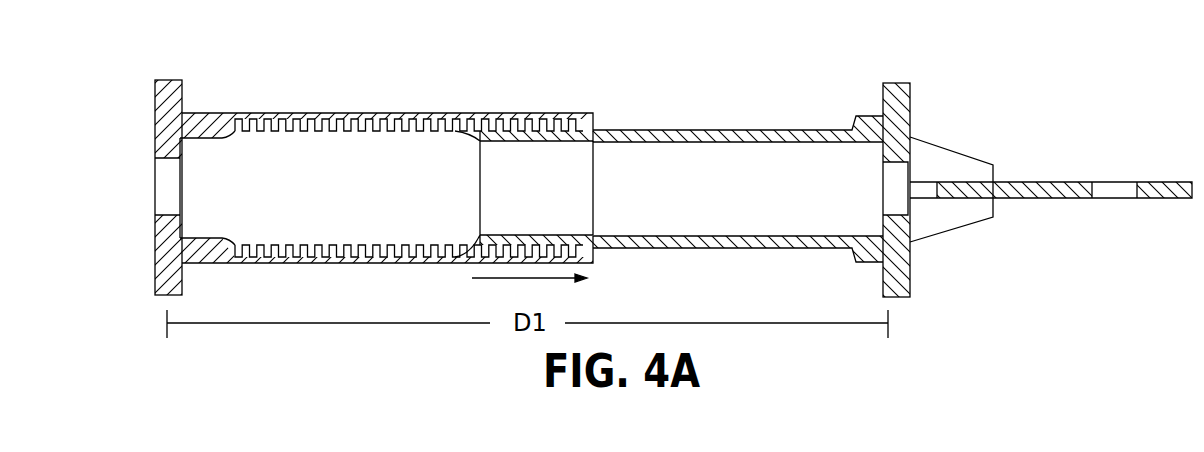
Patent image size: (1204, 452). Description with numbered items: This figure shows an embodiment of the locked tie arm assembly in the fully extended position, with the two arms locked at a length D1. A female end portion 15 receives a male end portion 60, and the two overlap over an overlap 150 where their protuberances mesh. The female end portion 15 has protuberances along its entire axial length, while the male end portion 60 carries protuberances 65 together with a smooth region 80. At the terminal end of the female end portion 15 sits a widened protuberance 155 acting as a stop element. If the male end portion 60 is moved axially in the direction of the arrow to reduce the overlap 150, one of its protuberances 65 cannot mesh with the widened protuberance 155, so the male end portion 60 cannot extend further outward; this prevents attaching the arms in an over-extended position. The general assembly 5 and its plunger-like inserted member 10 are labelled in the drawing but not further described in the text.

The syringe assembly 5 is at (374, 160).
The plunger 10 is at (823, 162).
The female end portion 15 is at (385, 113).
The male end portion 60 is at (693, 129).
The protuberances 65 is at (437, 118).
The smooth region 80 is at (808, 92).
The overlap 150 is at (595, 101).
The widened protuberance 155 is at (598, 129).